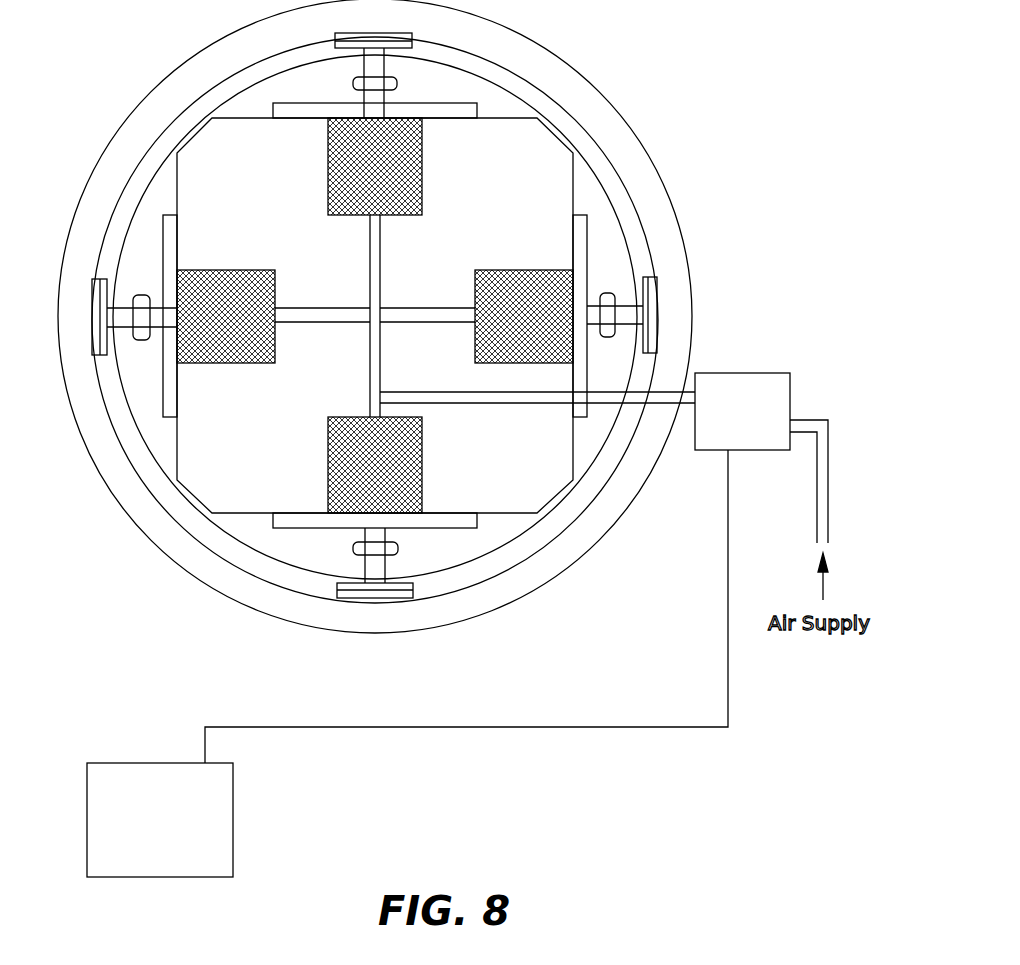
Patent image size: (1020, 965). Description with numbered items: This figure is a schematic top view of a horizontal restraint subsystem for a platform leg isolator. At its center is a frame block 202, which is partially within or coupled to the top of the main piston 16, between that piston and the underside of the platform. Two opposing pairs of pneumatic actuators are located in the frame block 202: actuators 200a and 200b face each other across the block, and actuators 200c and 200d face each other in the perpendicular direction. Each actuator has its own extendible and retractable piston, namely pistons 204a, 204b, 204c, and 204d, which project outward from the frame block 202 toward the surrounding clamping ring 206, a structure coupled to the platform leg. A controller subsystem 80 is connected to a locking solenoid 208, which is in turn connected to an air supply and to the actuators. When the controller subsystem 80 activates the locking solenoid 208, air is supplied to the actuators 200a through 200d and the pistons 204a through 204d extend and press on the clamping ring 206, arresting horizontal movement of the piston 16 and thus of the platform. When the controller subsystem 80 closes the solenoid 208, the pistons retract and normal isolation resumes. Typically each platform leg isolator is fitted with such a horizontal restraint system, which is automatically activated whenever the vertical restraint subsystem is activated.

The piston 16 is at (522, 100).
The clamping ring 206 is at (603, 97).
The frame block 202 is at (220, 470).
The pneumatic actuator 200a is at (515, 283).
The pneumatic actuator 200b is at (242, 287).
The pneumatic actuator 200c is at (395, 165).
The pneumatic actuator 200d is at (407, 465).
The piston 204a is at (623, 312).
The piston 204b is at (125, 316).
The piston 204c is at (363, 70).
The piston 204d is at (387, 563).
The locking solenoid 208 is at (604, 458).
The controller subsystem 80 is at (407, 663).